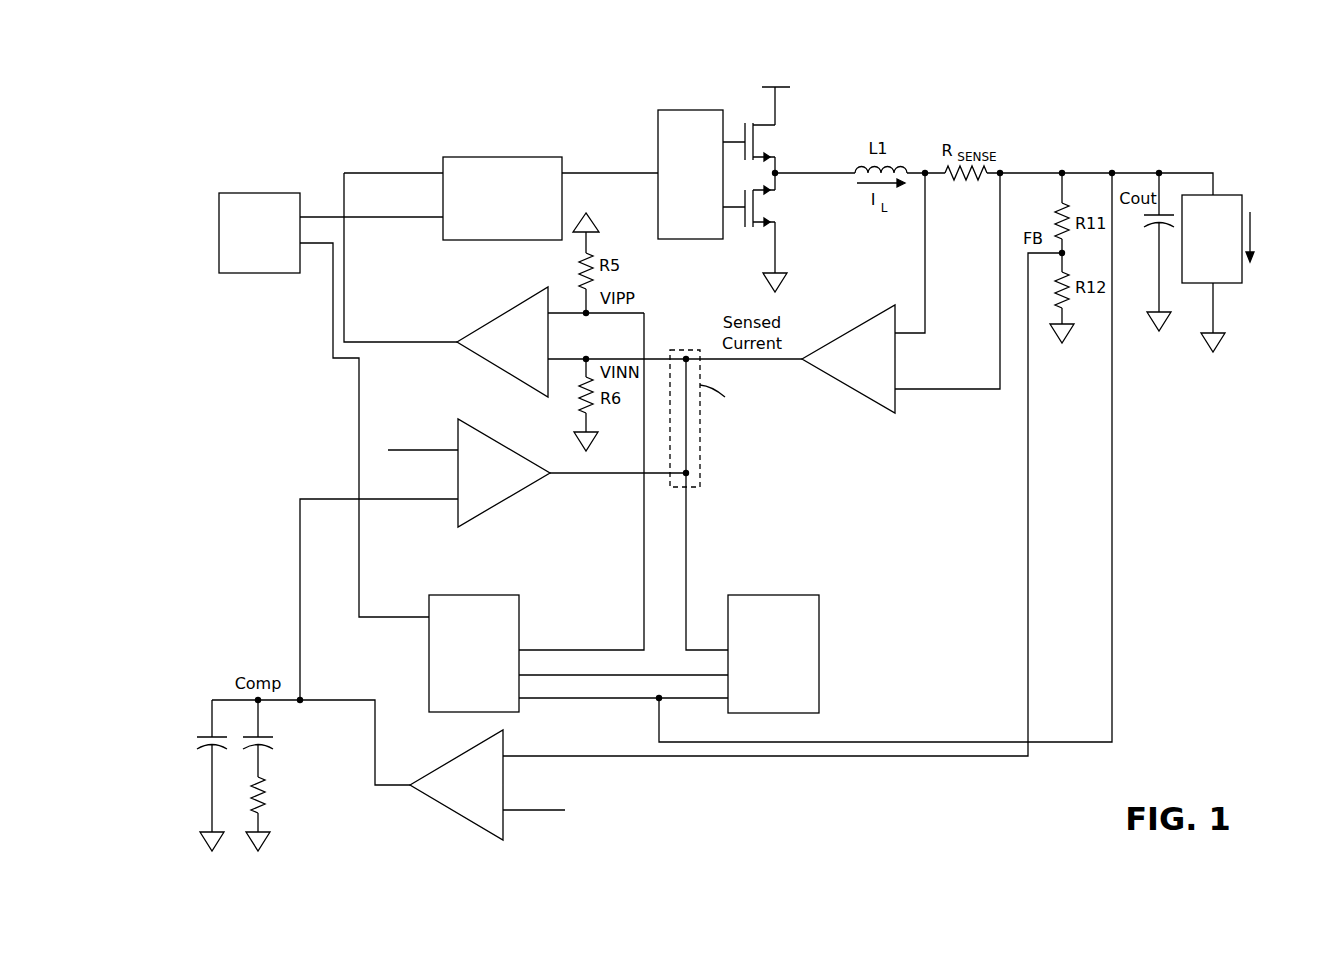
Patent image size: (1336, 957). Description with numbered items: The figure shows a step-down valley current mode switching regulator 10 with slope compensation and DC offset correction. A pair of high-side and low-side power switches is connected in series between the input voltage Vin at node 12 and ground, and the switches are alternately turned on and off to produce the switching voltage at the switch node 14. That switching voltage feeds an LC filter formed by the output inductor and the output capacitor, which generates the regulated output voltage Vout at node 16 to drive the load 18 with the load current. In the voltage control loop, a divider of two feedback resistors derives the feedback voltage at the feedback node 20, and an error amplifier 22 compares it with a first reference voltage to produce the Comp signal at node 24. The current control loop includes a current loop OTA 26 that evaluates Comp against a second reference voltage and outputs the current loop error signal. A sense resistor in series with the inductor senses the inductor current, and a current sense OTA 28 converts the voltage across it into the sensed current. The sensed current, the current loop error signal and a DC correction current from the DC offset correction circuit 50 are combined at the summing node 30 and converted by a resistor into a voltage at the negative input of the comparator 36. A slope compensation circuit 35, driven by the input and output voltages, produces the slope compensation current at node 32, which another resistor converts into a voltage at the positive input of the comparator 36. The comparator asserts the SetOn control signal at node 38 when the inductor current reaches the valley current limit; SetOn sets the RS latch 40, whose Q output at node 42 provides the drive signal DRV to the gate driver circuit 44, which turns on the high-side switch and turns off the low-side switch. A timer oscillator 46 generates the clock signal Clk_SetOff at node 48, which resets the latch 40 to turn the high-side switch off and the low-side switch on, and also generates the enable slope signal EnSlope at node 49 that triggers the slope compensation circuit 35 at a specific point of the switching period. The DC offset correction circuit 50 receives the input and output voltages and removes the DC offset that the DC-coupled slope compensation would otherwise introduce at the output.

The step-down valley current mode switching regulator 10 is at (1045, 115).
The input voltage node 12 is at (787, 89).
The switch node 14 is at (828, 178).
The output voltage node 16 is at (1085, 172).
The load 18 is at (1233, 285).
The feedback node 20 is at (923, 758).
The error amplifier 22 is at (445, 808).
The error amplifier output node 24 is at (298, 592).
The current loop operational transconductance amplifier 26 is at (518, 455).
The current sense operational transconductance amplifier 28 is at (890, 412).
The current summing node 30 is at (683, 352).
The slope compensation signal node 32 is at (640, 563).
The slope compensation circuit 35 is at (428, 653).
The comparator 36 is at (492, 321).
The control signal node 38 is at (344, 285).
The Reset-Set latch 40 is at (507, 156).
The latch output node 42 is at (590, 172).
The gate driver circuit 44 is at (672, 109).
The timer oscillator 46 is at (219, 243).
The clock signal node 48 is at (321, 214).
The enable slope signal node 49 is at (333, 330).
The DC offset correction circuit 50 is at (819, 658).